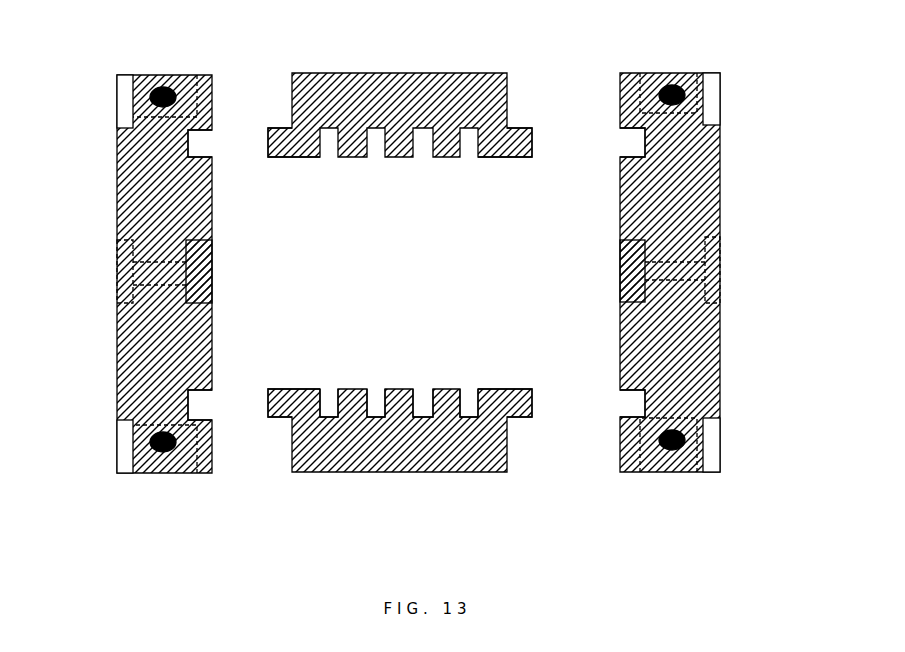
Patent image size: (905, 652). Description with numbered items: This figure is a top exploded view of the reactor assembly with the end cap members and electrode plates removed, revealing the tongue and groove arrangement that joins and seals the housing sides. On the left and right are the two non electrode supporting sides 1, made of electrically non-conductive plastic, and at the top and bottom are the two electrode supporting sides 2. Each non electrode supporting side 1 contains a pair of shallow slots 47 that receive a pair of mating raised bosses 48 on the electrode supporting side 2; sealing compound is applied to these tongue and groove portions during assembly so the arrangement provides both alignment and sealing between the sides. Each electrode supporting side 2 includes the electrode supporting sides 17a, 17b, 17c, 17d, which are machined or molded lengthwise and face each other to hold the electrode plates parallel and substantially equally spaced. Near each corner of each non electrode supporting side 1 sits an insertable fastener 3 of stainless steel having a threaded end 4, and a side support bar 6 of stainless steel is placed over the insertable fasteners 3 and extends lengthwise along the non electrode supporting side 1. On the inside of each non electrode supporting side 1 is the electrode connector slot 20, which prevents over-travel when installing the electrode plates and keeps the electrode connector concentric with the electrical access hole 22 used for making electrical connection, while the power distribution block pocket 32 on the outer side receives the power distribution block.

The non electrode supporting side 1 is at (143, 184).
The electrode supporting side 2 is at (340, 125).
The insertable fastener 3 is at (133, 77).
The threaded end 4 is at (165, 95).
The side support bar 6 is at (133, 125).
The electrode supporting side 17a is at (470, 397).
The electrode supporting side 17b is at (423, 402).
The electrode supporting side 17c is at (375, 402).
The electrode supporting side 17d is at (327, 402).
The electrode connector slot 20 is at (200, 275).
The electrical access hole 22 is at (130, 278).
The power distribution block pocket 32 is at (125, 256).
The shallow slot 47 is at (192, 142).
The raised boss 48 is at (279, 148).